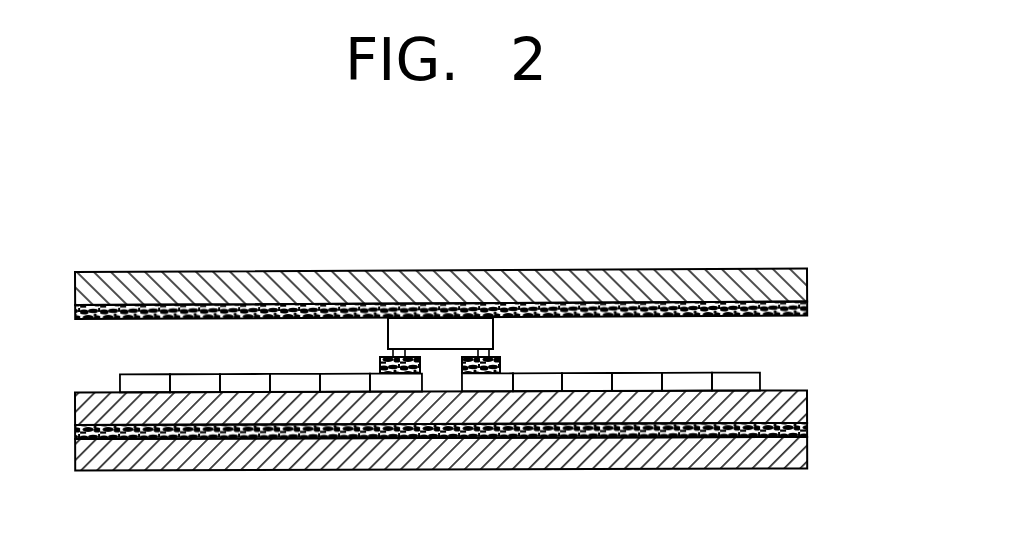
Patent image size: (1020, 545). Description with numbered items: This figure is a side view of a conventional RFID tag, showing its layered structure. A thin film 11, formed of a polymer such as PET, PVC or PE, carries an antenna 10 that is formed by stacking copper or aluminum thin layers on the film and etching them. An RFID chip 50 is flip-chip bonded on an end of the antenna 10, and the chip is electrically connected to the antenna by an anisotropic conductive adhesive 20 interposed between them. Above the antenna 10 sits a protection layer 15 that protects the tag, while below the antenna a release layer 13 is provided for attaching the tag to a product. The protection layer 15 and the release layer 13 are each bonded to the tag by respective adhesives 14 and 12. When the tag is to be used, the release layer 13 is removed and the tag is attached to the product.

The antenna 10 is at (760, 374).
The thin film 11 is at (800, 407).
The adhesive 12 is at (805, 430).
The release layer 13 is at (800, 460).
The adhesive 14 is at (803, 309).
The protection layer 15 is at (800, 284).
The anisotropic conductive adhesive 20 is at (500, 363).
The RFID chip 50 is at (435, 328).